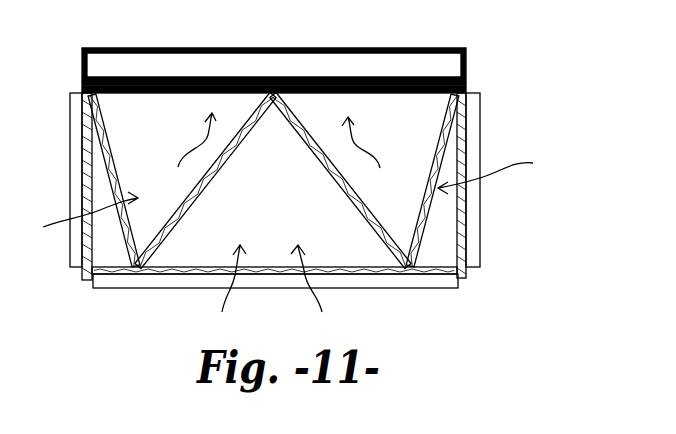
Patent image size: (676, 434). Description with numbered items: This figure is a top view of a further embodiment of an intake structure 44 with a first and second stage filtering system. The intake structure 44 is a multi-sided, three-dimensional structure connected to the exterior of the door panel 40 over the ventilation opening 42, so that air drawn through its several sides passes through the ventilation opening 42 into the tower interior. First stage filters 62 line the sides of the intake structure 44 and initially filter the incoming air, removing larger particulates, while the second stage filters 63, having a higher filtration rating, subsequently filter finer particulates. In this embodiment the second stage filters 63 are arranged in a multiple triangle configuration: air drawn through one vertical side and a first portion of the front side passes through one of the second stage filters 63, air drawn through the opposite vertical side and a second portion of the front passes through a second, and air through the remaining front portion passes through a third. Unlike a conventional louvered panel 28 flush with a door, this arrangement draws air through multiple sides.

The louvered panel 28 is at (481, 200).
The door panel 40 is at (458, 66).
The ventilation opening 42 is at (252, 85).
The intake structure 44 is at (333, 171).
The first stage filters 62 is at (82, 162).
The second stage filters 63 is at (112, 147).